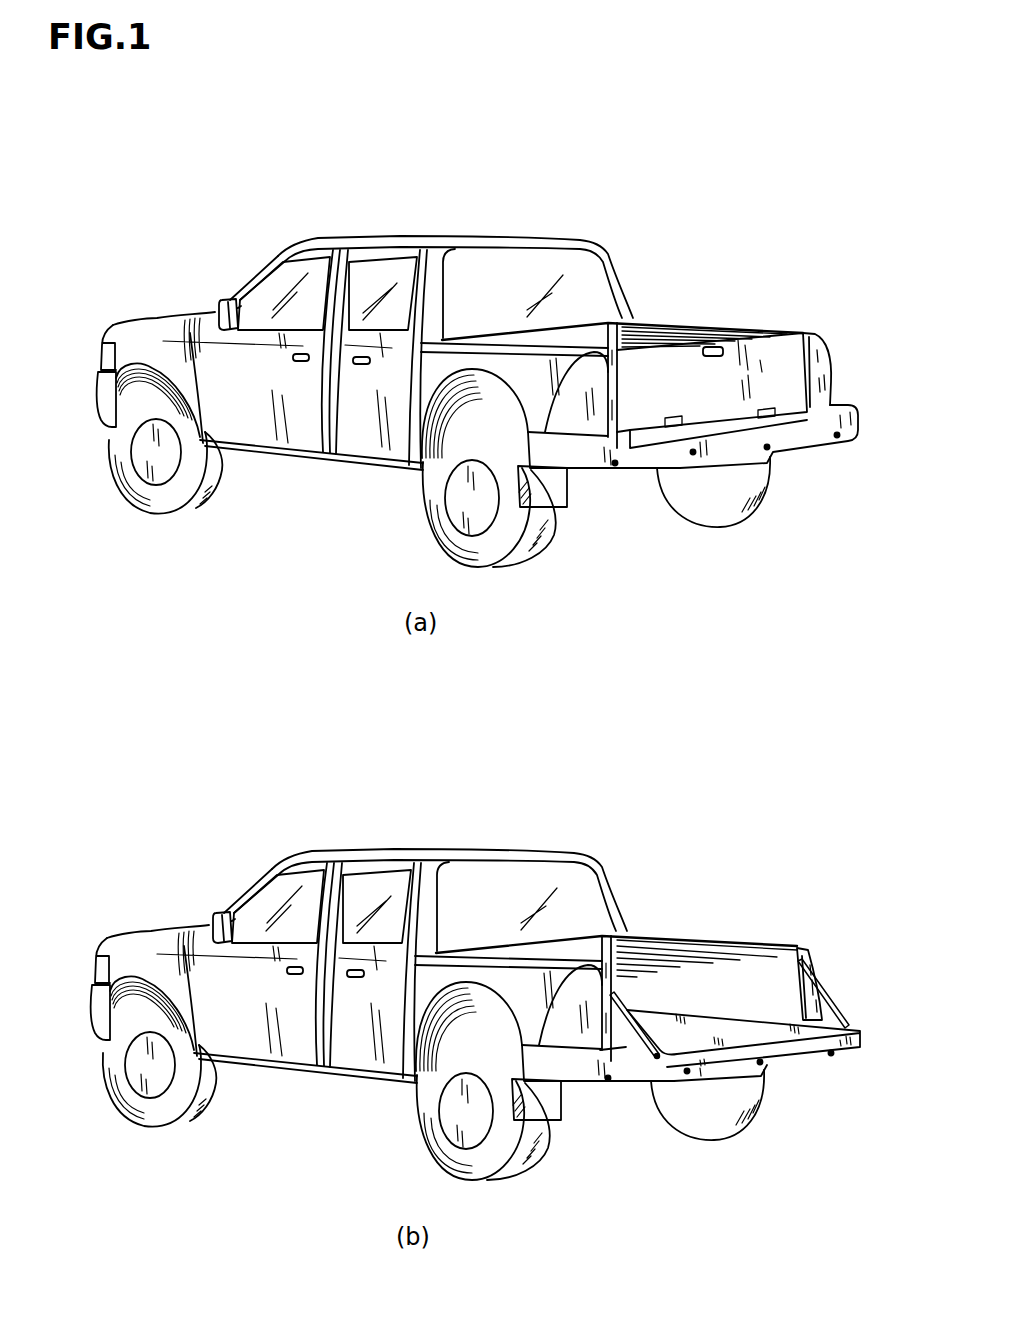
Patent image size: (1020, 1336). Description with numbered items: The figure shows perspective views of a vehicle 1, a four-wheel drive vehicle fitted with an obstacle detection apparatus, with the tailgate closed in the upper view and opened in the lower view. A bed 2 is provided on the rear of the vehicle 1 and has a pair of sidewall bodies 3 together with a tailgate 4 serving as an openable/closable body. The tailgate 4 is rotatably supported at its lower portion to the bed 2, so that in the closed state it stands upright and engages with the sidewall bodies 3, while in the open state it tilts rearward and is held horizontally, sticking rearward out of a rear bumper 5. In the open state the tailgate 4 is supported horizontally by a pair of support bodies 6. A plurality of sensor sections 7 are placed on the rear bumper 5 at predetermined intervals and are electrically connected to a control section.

The vehicle 1 is at (497, 667).
The bed 2 is at (659, 646).
The sidewall bodies 3 is at (677, 320).
The tailgate 4 is at (763, 378).
The rear bumper 5 is at (590, 472).
The support bodies 6 is at (825, 1000).
The sensor sections 7 is at (615, 463).